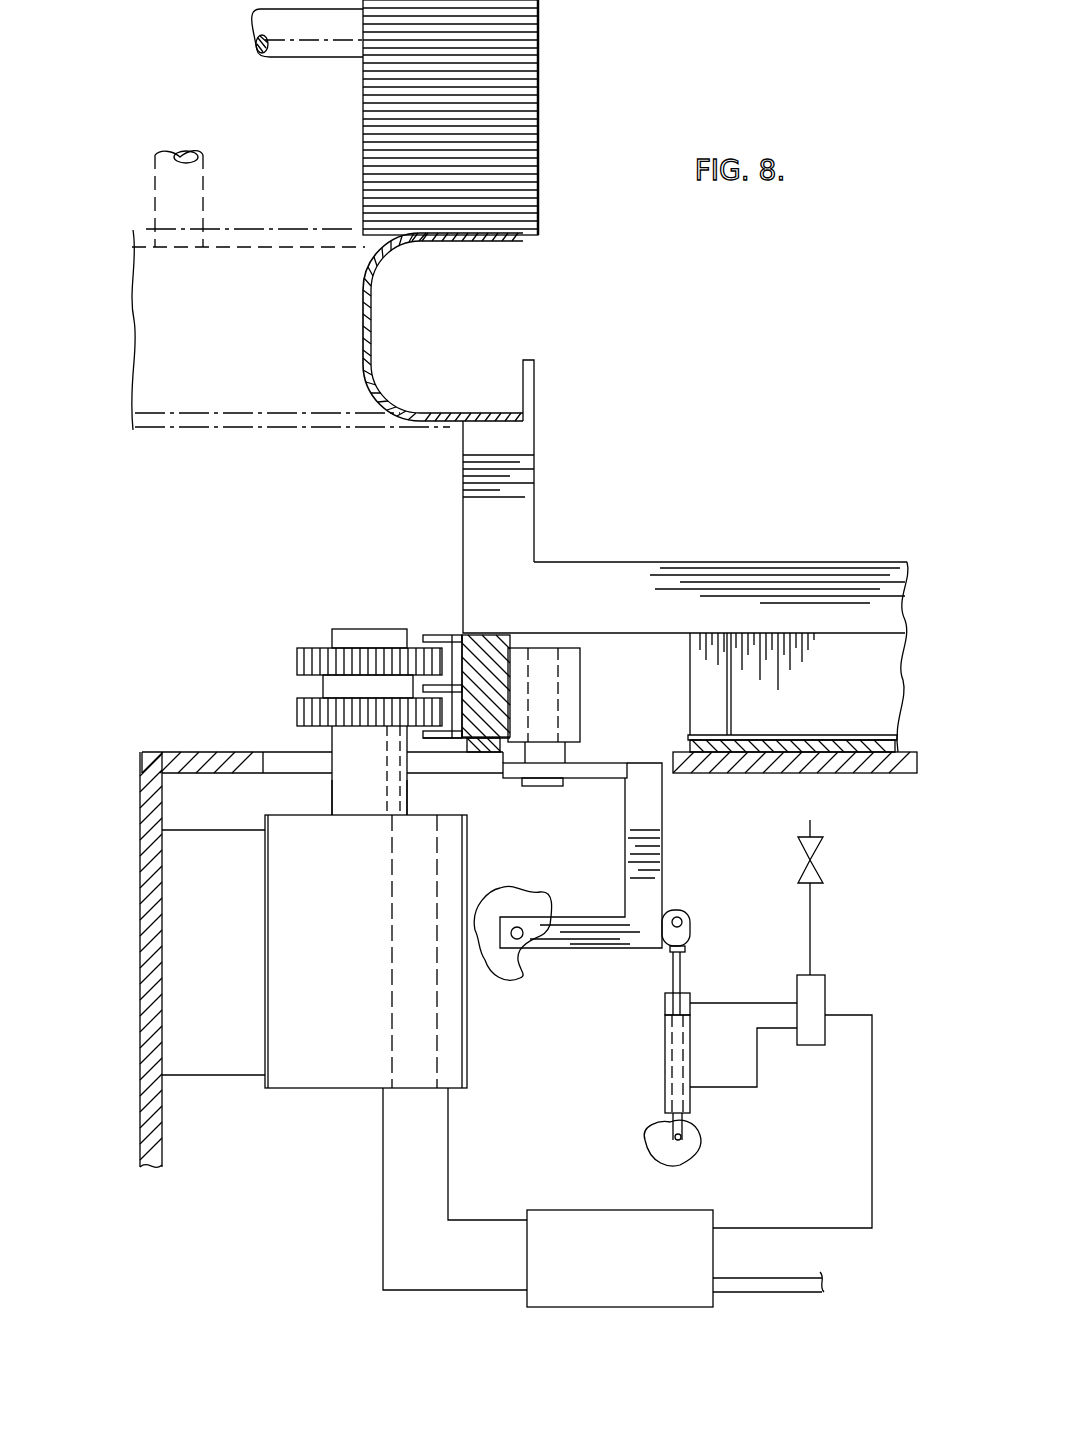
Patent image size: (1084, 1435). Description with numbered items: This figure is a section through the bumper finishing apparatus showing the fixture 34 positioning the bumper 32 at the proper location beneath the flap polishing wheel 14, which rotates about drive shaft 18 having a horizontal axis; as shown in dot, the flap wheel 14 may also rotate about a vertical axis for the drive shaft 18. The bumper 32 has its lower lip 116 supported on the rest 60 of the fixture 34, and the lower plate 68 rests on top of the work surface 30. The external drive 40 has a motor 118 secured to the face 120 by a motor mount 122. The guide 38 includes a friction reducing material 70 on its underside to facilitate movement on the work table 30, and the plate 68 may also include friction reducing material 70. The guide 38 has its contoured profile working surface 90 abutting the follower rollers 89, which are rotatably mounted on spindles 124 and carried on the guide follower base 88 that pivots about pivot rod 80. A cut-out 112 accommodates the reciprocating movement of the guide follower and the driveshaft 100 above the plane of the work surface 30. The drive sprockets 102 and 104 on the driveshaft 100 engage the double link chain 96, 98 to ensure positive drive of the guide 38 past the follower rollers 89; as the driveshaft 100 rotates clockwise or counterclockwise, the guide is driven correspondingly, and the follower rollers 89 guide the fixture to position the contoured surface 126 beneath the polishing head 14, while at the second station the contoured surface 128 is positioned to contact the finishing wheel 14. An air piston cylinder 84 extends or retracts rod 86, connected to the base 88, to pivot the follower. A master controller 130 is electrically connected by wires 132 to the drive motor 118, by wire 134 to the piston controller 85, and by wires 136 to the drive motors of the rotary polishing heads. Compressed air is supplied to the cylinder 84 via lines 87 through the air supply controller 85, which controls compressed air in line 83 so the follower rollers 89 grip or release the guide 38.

The abrasive flap wheel 14 is at (552, 104).
The drive shaft 18 is at (303, 55).
The work surface 30 is at (809, 657).
The bumper 32 is at (445, 327).
The fixture 34 is at (685, 496).
The guide 38 is at (493, 652).
The external drive 40 is at (326, 984).
The bumper rest 60 is at (500, 422).
The support plate 68 is at (764, 733).
The friction-reducing material 70 is at (858, 755).
The pivot rod 80 is at (517, 940).
The compressed air line 83 is at (812, 905).
The air piston cylinder 84 is at (665, 1052).
The air supply controller 85 is at (826, 985).
The rod 86 is at (690, 978).
The air lines 87 is at (725, 1005).
The guide follower base 88 is at (663, 810).
The follower rollers 89 is at (580, 673).
The working surface 90 is at (513, 648).
The link chain 96 is at (444, 635).
The link chain 98 is at (453, 722).
The driveshaft 100 is at (395, 798).
The drive sprocket 102 is at (300, 652).
The drive sprocket 104 is at (300, 713).
The cut-out 112 is at (285, 752).
The lower lip 116 is at (477, 413).
The motor 118 is at (265, 948).
The face 120 is at (140, 1128).
The motor mount 122 is at (214, 848).
The spindles 124 is at (553, 757).
The contoured surface 126 is at (473, 238).
The contoured surface 128 is at (365, 308).
The master controller 130 is at (530, 1306).
The wires 132 is at (450, 1178).
The wire 134 is at (872, 1085).
The wires 136 is at (783, 1292).